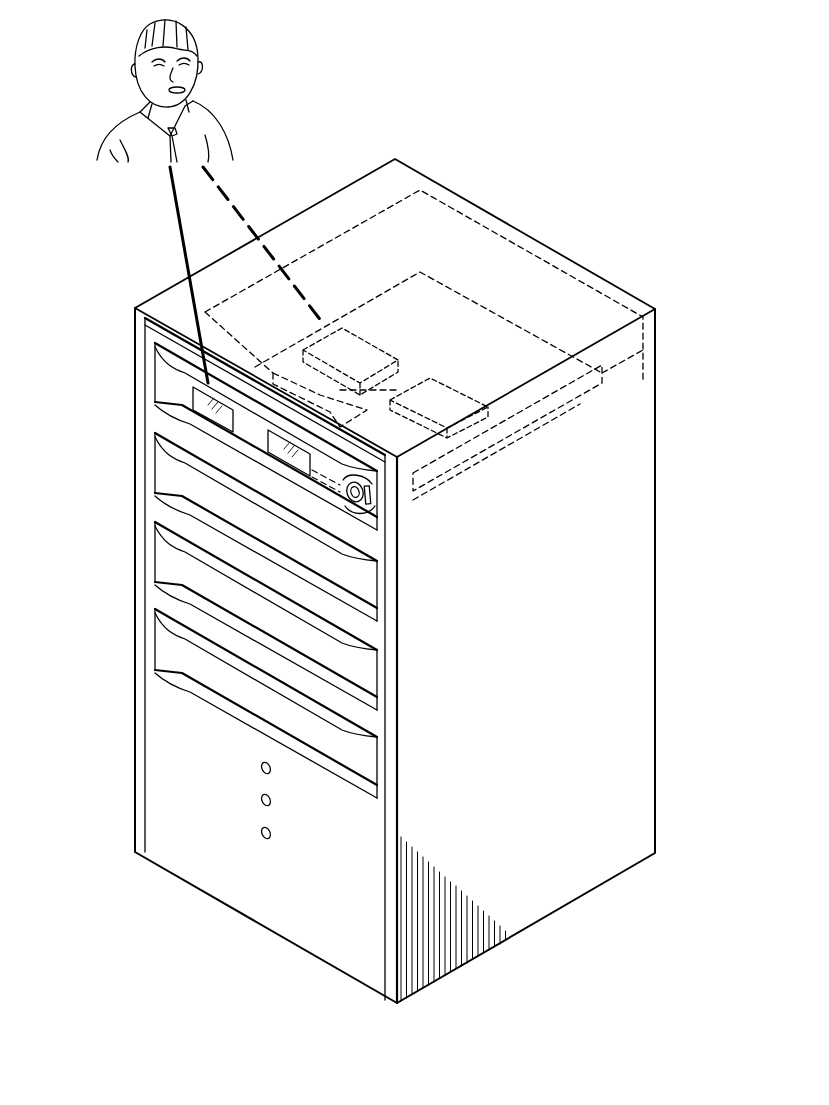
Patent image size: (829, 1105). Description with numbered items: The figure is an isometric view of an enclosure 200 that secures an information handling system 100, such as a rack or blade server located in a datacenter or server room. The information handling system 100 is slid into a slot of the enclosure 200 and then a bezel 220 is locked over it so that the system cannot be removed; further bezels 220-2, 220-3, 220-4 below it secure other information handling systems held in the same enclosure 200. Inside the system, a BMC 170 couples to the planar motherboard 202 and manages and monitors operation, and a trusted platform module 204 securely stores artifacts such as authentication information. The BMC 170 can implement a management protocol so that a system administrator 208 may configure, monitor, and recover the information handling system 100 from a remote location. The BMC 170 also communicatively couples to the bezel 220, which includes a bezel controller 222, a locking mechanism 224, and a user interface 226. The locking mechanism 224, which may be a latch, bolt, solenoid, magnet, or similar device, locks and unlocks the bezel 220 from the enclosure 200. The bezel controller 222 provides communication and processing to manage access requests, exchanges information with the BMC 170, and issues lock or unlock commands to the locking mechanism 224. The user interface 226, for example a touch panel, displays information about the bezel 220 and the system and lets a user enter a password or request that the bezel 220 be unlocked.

The information handling system 100 is at (450, 54).
The enclosure 200 is at (511, 218).
The planar motherboard 202 is at (530, 420).
The trusted platform module 204 is at (440, 405).
The BMC 170 is at (358, 352).
The system administrator 208 is at (133, 55).
The bezel 220 is at (160, 369).
The bezel 220-2 is at (158, 474).
The bezel 220-3 is at (158, 567).
The bezel 220-4 is at (158, 654).
The bezel controller 222 is at (303, 452).
The locking mechanism 224 is at (357, 513).
The user interface 226 is at (196, 414).